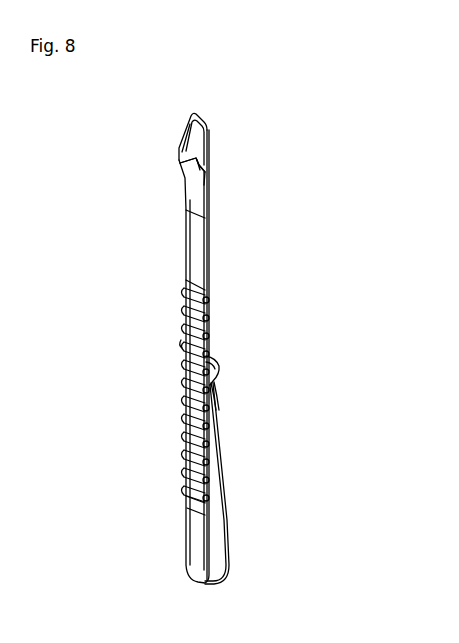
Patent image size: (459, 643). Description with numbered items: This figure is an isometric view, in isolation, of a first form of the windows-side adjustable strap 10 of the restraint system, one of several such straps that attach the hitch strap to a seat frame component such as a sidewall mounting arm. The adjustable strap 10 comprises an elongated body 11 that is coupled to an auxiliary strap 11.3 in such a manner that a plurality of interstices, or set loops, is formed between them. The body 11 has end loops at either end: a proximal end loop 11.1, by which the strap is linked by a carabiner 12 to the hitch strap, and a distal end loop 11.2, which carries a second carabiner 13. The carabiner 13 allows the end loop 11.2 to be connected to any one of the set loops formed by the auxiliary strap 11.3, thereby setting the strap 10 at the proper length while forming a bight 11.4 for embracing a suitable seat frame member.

The adjustable strap 10 is at (318, 182).
The elongated body 11 is at (196, 254).
The proximal end loop 11.1 is at (187, 165).
The distal end loop 11.2 is at (219, 380).
The auxiliary strap 11.3 is at (190, 437).
The bight 11.4 is at (250, 583).
The carabiner 12 is at (197, 118).
The second carabiner 13 is at (213, 360).